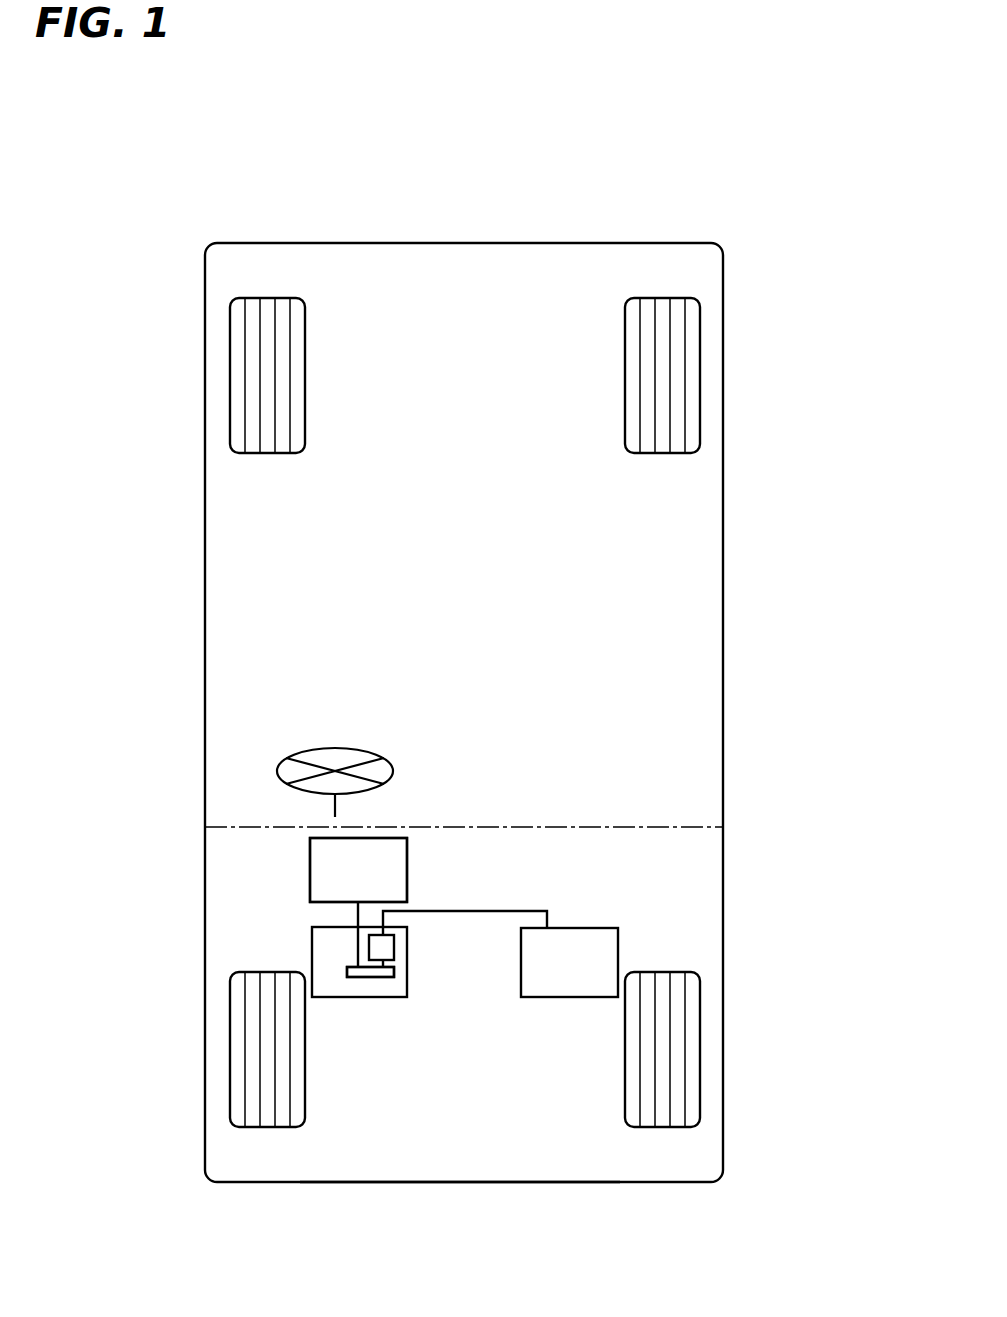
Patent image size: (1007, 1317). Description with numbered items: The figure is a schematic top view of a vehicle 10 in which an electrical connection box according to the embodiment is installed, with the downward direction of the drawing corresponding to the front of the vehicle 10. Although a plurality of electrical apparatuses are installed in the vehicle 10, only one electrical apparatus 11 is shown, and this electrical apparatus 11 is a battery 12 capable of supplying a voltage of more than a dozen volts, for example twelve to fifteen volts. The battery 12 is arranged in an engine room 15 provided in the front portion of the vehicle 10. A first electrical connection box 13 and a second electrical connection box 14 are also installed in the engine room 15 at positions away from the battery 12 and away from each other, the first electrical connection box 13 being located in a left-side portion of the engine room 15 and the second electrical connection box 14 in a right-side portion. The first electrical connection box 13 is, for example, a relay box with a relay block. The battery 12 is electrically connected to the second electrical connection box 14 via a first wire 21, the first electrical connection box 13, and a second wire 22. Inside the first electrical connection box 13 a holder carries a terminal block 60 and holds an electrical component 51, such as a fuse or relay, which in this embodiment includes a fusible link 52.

The vehicle 10 is at (786, 177).
The electrical apparatus 11 is at (407, 848).
The battery 12 is at (358, 870).
The first electrical connection box 13 is at (312, 962).
The second electrical connection box 14 is at (605, 928).
The engine room 15 is at (453, 1170).
The first wire 21 is at (357, 919).
The second wire 22 is at (500, 911).
The electrical component 51 is at (371, 977).
The fusible link 52 is at (370, 972).
The terminal block 60 is at (394, 948).